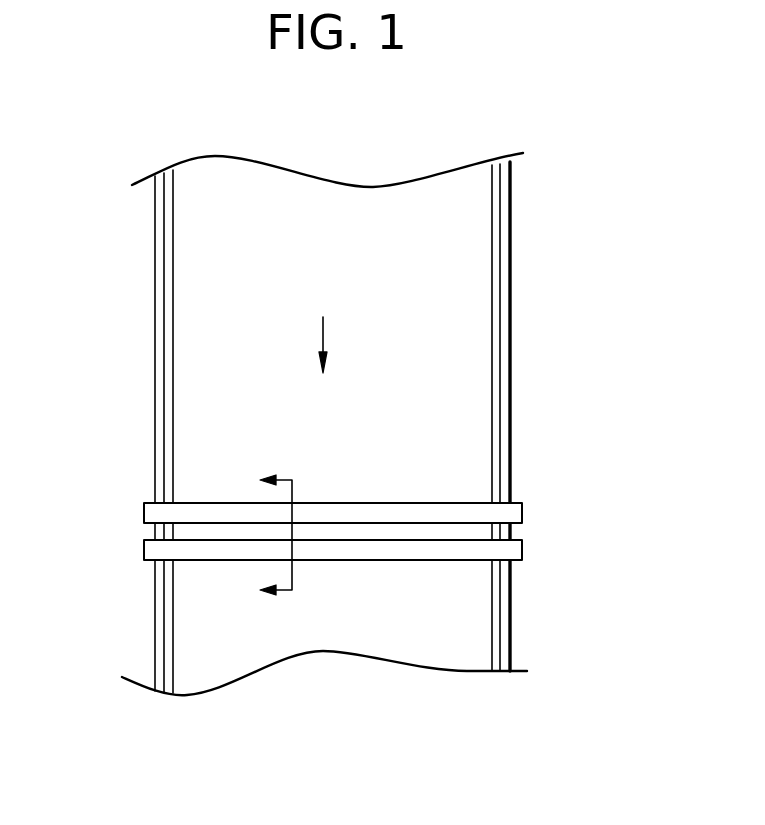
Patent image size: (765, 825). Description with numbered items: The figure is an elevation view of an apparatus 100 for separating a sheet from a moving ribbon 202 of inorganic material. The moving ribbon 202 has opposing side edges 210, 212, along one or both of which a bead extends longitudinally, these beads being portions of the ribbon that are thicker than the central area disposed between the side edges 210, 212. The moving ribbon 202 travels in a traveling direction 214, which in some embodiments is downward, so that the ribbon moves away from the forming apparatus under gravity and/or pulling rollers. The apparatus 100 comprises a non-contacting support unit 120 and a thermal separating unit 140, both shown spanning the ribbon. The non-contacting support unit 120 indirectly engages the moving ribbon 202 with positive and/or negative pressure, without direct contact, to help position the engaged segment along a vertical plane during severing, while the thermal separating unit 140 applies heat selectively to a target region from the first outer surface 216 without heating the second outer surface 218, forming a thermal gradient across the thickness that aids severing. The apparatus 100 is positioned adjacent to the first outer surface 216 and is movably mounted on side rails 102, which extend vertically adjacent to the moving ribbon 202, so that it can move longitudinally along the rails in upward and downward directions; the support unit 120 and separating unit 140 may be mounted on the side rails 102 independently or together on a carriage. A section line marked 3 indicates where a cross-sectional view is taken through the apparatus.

The apparatus 100 is at (557, 516).
The side rails 102 is at (155, 615).
The non-contacting support unit 120 is at (357, 514).
The thermal separating unit 140 is at (377, 552).
The moving ribbon 202 is at (348, 259).
The side edge 210 is at (164, 215).
The side edge 212 is at (500, 210).
The traveling direction 214 is at (323, 333).
The first outer surface 216 is at (465, 415).
The second outer surface 218 is at (500, 375).
The section line 3- 3 is at (266, 534).